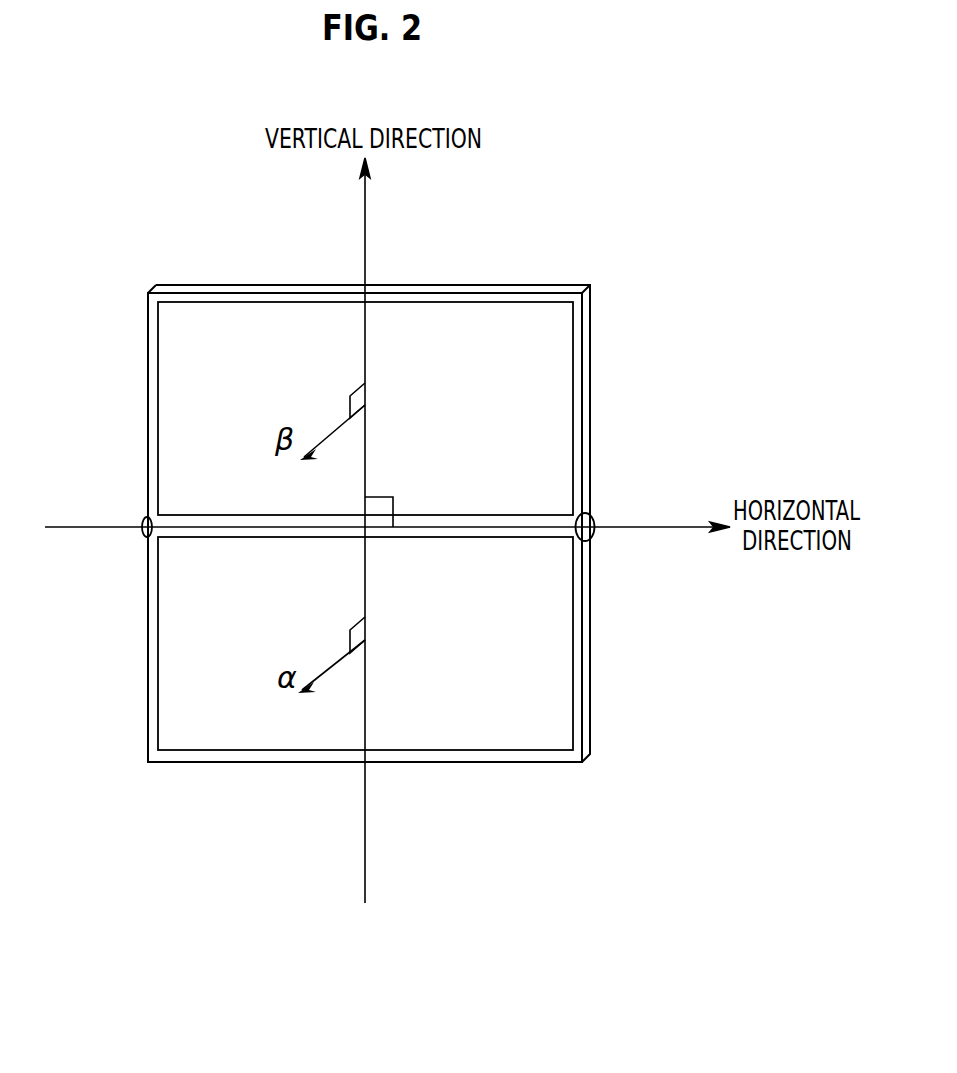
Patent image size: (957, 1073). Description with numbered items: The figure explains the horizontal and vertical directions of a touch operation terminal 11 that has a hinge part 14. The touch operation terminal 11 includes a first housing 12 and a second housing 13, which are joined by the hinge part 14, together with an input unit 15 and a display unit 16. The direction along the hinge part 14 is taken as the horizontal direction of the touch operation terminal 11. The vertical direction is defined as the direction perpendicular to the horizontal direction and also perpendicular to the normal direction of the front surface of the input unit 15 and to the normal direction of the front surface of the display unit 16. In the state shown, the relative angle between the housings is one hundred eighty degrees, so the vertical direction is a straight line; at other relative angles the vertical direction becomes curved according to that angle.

The touch operation terminal 11 is at (160, 163).
The first housing 12 is at (258, 763).
The second housing 13 is at (260, 285).
The hinge part 14 is at (586, 521).
The input unit 15 is at (480, 712).
The display unit 16 is at (466, 345).